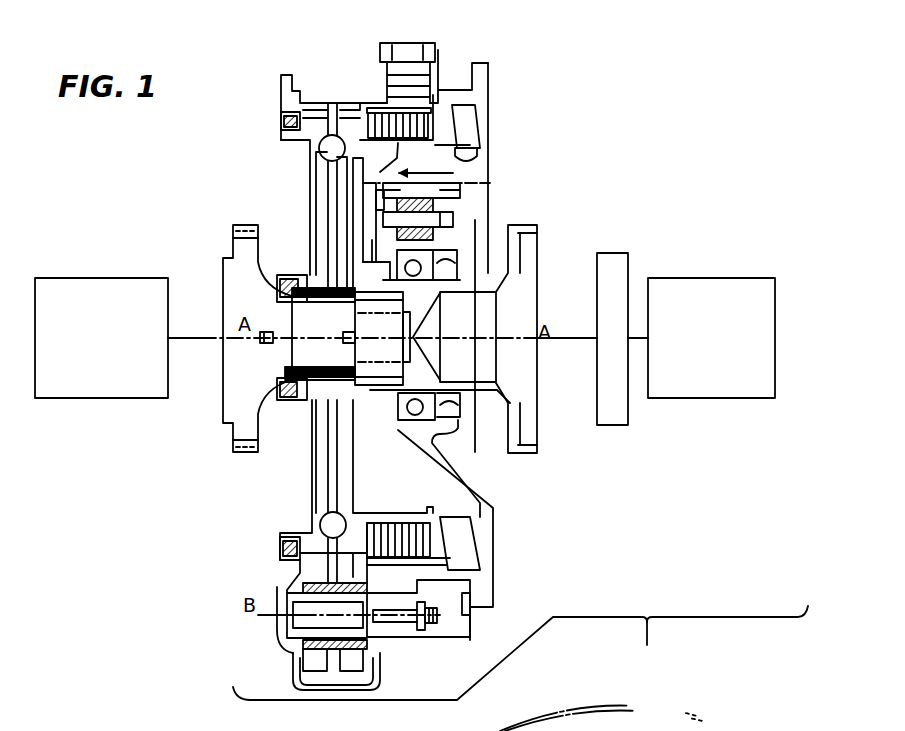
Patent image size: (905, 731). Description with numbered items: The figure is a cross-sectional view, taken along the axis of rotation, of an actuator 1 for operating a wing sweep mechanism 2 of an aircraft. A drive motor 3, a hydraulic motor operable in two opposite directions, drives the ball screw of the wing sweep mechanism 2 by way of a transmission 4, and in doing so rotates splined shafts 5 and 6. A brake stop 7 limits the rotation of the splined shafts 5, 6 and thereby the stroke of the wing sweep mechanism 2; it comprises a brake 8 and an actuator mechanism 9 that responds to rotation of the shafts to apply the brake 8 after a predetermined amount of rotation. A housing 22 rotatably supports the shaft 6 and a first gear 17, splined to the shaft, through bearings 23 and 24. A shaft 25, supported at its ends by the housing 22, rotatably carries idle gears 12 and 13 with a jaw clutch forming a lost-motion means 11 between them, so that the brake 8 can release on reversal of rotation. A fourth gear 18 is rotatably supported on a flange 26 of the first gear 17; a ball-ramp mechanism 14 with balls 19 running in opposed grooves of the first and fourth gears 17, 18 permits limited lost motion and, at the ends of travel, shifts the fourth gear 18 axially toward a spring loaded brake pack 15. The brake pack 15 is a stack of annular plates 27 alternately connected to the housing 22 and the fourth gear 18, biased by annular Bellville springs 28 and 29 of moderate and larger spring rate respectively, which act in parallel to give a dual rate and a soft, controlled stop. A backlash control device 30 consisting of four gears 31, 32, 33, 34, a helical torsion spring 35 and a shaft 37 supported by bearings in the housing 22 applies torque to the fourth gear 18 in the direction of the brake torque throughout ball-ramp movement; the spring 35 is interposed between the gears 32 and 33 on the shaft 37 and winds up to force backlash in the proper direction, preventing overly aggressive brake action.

The actuator 1 is at (520, 668).
The wing sweep mechanism 2 is at (125, 278).
The drive motor 3 is at (760, 278).
The transmission 4 is at (612, 400).
The splined shaft 5 is at (293, 356).
The splined shaft 6 is at (372, 272).
The brake stop 7 is at (245, 84).
The brake 8 is at (452, 78).
The actuator mechanism 9 is at (312, 190).
The means for providing lost motion 11 is at (302, 588).
The idle gear 12 is at (297, 661).
The idle gear 13 is at (395, 666).
The ball-ramp mechanism 14 is at (333, 122).
The spring loaded brake pack 15 is at (425, 62).
The first gear 17 is at (308, 513).
The fourth gear 18 is at (344, 490).
The balls 19 is at (331, 150).
The housing 22 is at (489, 86).
The bearing 23 is at (283, 124).
The bearing 24 is at (443, 264).
The shaft 25 is at (388, 633).
The flange 26 is at (345, 400).
The annular plates 27 is at (386, 108).
The Bellville spring 28 is at (453, 173).
The Bellville spring 29 is at (470, 124).
The backlash control device 30 is at (470, 186).
The gear 31 is at (337, 242).
The gear 32 is at (368, 202).
The gear 33 is at (440, 200).
The gear 34 is at (440, 300).
The helical torsion spring 35 is at (462, 152).
The shaft 37 is at (440, 222).